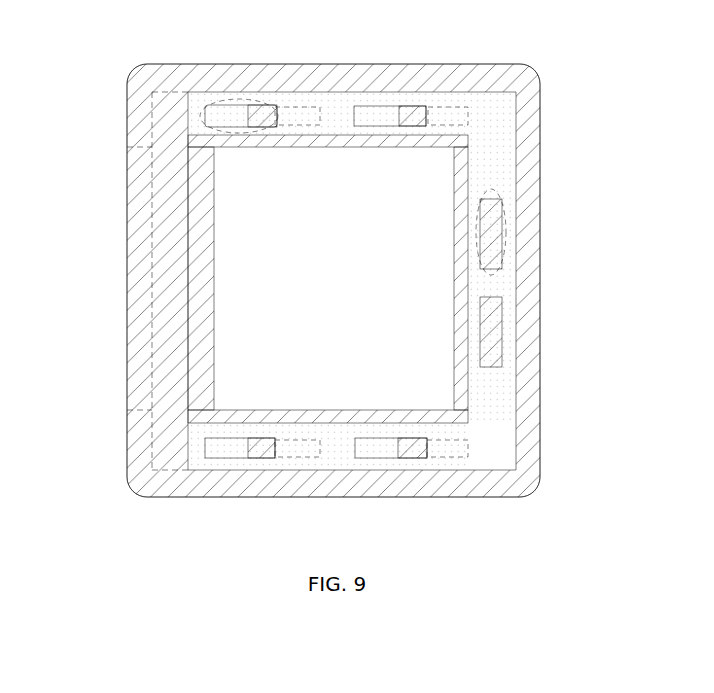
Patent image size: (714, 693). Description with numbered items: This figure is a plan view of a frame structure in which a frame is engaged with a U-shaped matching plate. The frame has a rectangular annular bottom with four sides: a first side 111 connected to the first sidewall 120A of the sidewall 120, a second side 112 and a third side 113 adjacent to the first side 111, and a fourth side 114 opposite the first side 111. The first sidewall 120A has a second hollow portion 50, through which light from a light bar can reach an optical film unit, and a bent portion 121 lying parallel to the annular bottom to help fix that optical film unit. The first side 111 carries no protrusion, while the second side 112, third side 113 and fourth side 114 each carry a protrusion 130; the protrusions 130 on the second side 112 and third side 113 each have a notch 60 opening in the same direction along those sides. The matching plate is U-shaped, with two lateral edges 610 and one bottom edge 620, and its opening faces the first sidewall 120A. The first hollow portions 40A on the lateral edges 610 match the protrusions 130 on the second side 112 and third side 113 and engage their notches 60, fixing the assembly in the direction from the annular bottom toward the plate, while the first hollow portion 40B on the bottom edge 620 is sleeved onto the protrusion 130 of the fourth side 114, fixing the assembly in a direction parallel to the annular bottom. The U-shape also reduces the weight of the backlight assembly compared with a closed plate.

The second hollow portion 50 is at (140, 270).
The notch 60 is at (458, 450).
The first side 111 is at (205, 228).
The second side 112 is at (338, 141).
The third side 113 is at (337, 413).
The fourth side 114 is at (460, 288).
The sidewall 120 is at (421, 72).
The first sidewall 120A is at (143, 127).
The bent portion 121 is at (168, 357).
The protrusion 130 is at (420, 120).
The first hollow portion 40A is at (245, 128).
The first hollow portion 40B is at (508, 212).
The lateral edge 610 is at (300, 99).
The bottom edge 620 is at (502, 163).